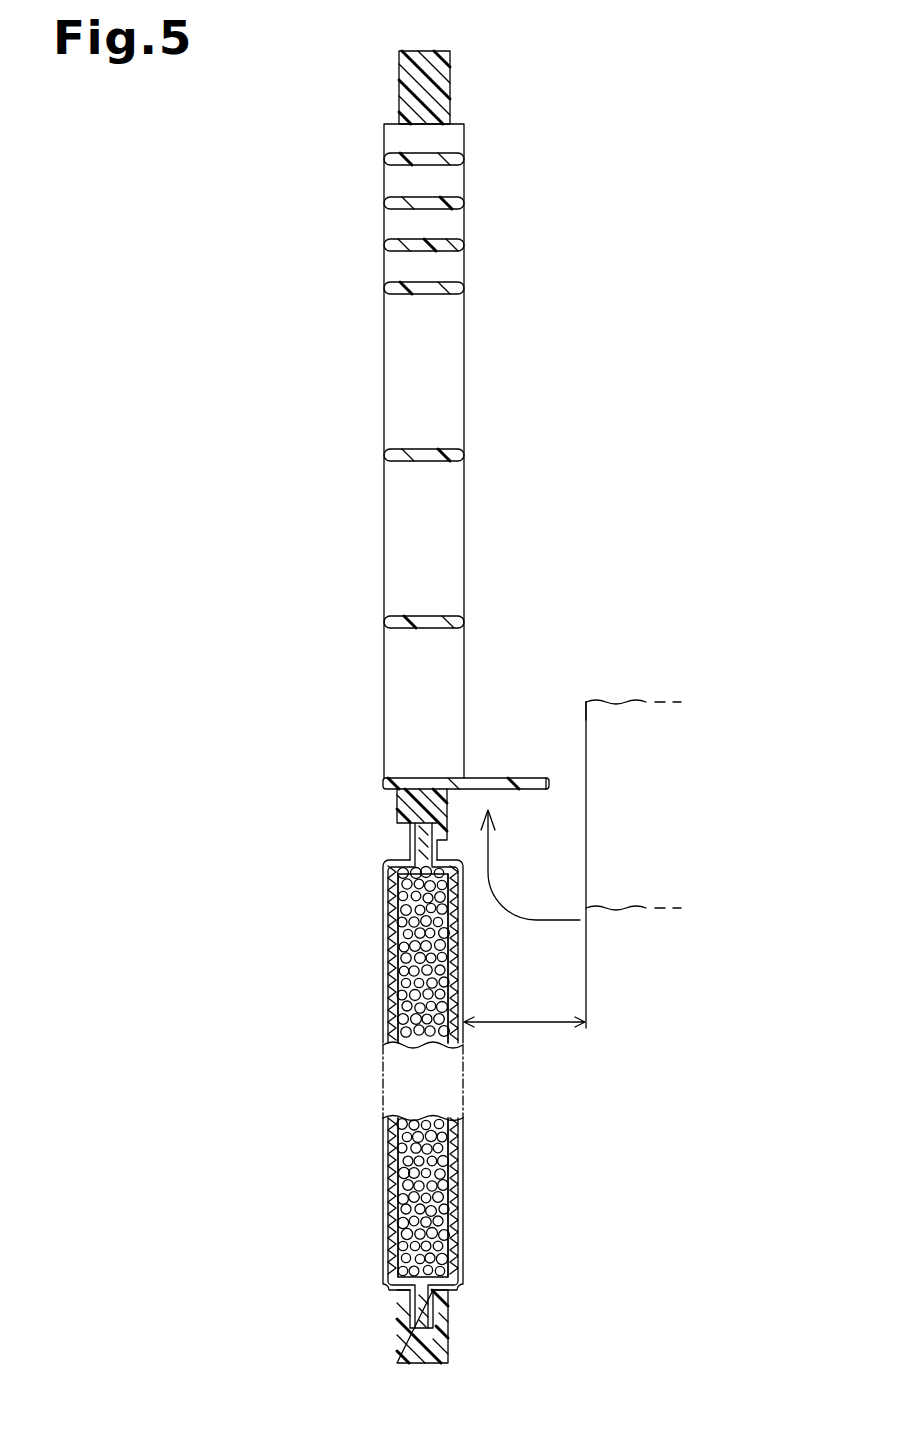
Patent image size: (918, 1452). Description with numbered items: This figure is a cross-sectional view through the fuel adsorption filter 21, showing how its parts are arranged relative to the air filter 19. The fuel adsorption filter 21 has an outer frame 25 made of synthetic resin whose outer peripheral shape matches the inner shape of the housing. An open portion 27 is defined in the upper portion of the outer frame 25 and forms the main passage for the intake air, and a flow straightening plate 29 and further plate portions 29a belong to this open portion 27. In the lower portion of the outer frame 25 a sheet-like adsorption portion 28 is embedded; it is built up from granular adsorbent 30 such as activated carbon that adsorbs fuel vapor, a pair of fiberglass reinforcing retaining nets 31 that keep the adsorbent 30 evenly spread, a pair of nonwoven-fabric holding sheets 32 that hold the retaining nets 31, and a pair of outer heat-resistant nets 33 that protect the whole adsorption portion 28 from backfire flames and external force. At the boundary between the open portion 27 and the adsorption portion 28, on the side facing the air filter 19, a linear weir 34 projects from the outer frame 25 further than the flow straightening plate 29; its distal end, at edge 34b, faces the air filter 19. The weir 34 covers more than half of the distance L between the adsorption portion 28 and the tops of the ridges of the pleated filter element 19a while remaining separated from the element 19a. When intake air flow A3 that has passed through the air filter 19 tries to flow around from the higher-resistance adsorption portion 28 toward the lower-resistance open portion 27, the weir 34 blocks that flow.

The fuel adsorption filter 21 is at (479, 160).
The outer frame 25 is at (399, 80).
The open portion 27 is at (464, 620).
The adsorption portion 28 is at (431, 1094).
The flow straightening plate 29 is at (384, 451).
The rings 29a is at (384, 245).
The granular adsorbent 30 is at (400, 1043).
The reinforcing retaining nets 31 is at (392, 1141).
The holding sheets 32 is at (398, 1182).
The outer heat-resistant nets 33 is at (384, 1232).
The weir 34 is at (490, 778).
The flange outer edge 34b is at (566, 781).
The air filter 19 is at (622, 700).
The pleated filter element 19a is at (585, 702).
The intake air flow A3 is at (544, 921).
The distance L is at (524, 1007).